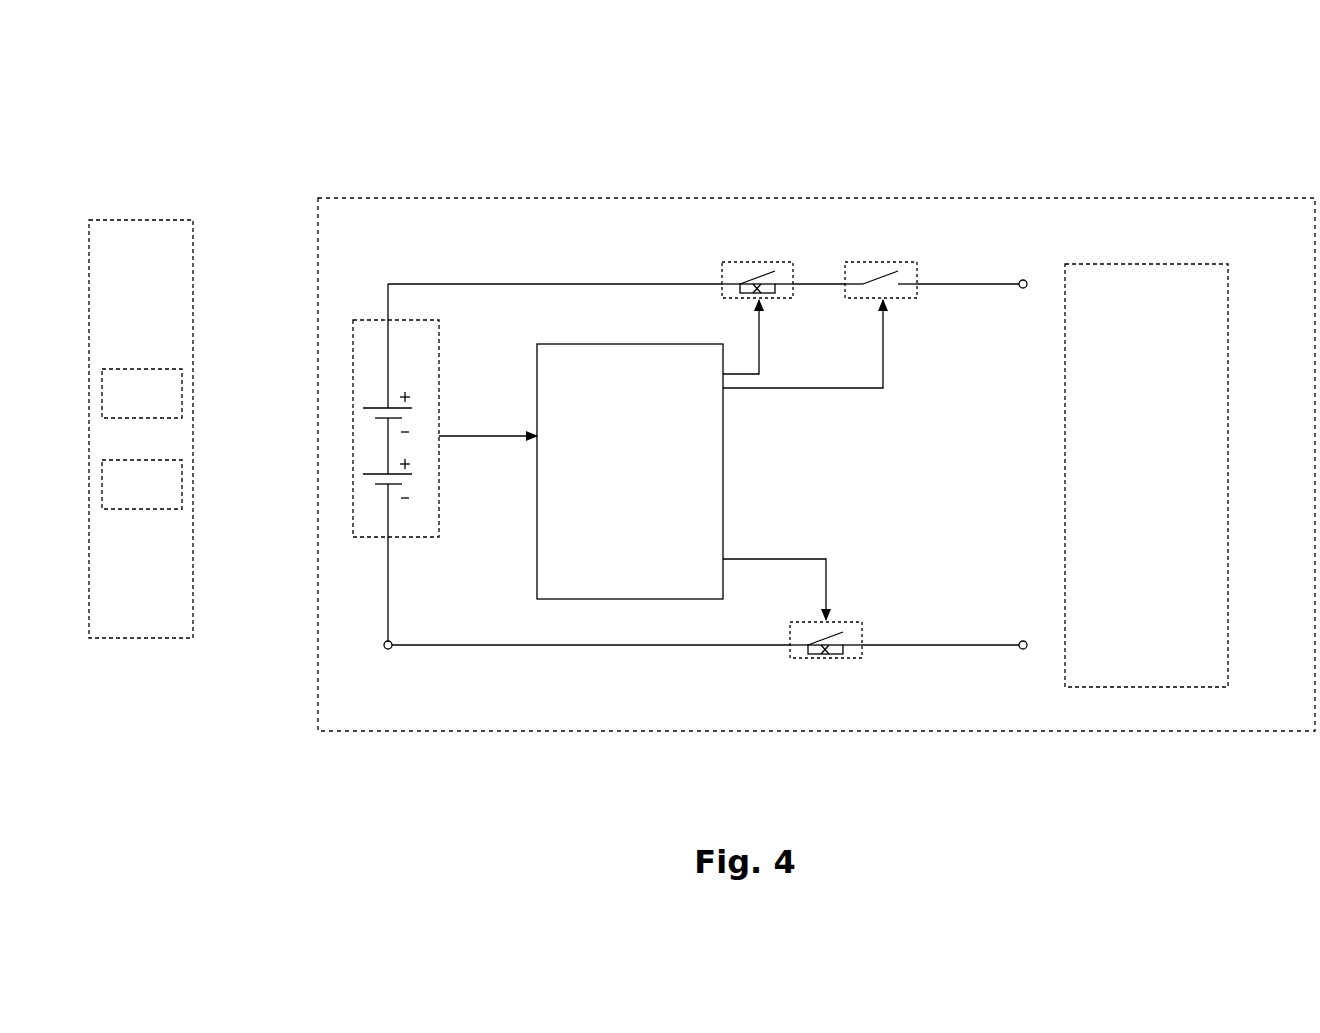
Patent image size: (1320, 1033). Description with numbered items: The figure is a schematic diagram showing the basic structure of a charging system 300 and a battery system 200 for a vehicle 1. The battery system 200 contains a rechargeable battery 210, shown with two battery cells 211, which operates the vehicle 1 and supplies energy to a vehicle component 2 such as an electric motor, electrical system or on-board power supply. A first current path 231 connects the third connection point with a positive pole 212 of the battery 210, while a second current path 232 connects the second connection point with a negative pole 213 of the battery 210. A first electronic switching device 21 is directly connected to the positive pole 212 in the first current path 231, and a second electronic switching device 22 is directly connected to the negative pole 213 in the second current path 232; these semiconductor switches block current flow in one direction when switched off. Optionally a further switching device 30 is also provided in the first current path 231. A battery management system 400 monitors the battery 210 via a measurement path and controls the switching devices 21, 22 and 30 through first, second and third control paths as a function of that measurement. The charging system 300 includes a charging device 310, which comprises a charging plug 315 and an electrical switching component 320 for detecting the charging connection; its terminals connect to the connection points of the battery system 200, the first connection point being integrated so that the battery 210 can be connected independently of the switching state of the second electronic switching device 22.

The charging system 300 is at (176, 89).
The charging device 310 is at (150, 640).
The charging plug 315 is at (142, 393).
The electrical switching component 320 is at (142, 484).
The battery system 200 is at (385, 152).
The vehicle 1 is at (587, 197).
The vehicle component 2 is at (1158, 264).
The rechargeable battery 210 is at (353, 377).
The battery cells 211 is at (373, 438).
The positive pole 212 is at (420, 346).
The negative pole 213 is at (420, 562).
The first current path 231 is at (555, 269).
The second current path 232 is at (591, 631).
The battery management system 400 is at (630, 471).
The first electronic switching device 21 is at (752, 262).
The second electronic switching device 22 is at (848, 658).
The further switching device 30 is at (893, 262).